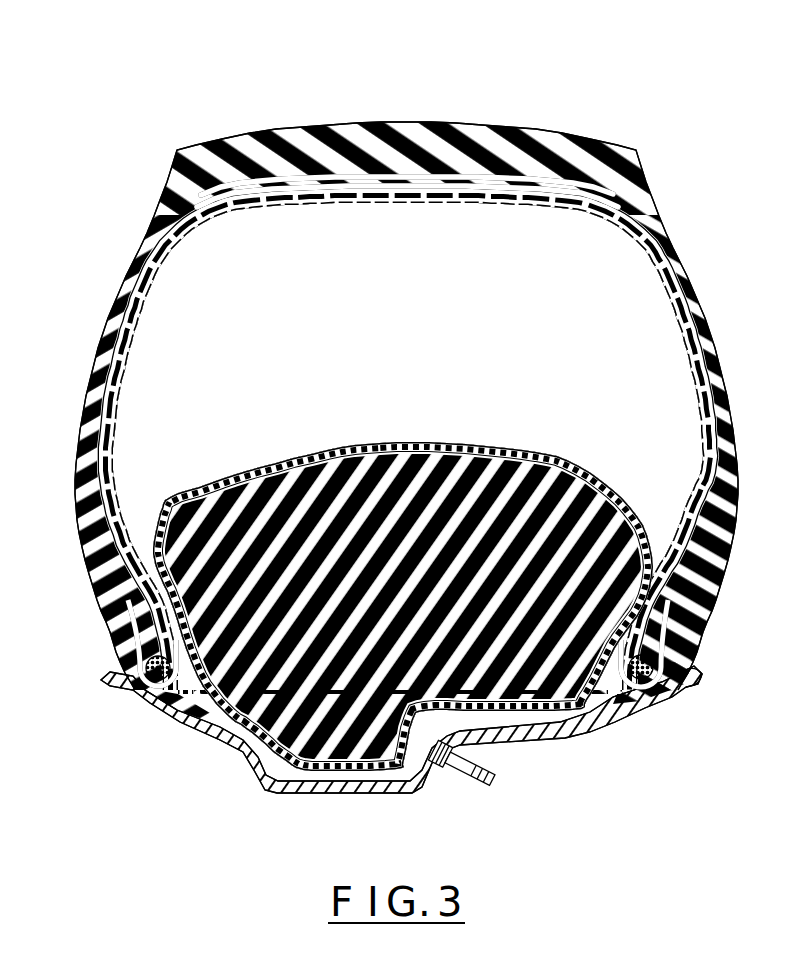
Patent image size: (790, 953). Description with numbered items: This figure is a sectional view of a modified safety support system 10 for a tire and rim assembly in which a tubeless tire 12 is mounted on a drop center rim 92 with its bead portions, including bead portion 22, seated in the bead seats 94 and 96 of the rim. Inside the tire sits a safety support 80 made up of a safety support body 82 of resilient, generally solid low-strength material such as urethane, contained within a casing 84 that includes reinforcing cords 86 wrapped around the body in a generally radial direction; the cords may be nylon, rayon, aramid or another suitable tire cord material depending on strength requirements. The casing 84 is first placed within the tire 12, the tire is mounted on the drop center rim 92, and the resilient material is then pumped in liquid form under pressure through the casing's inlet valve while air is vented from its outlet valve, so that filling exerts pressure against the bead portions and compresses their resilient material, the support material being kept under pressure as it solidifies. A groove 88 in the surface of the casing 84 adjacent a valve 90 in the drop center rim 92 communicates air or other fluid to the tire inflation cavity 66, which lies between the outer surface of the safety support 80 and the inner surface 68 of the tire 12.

The safety support system 10 is at (597, 78).
The tubeless tire 12 is at (395, 476).
The bead portion 22 is at (395, 584).
The tire inflation cavity 66 is at (496, 311).
The inner surface of the tire 68 is at (407, 214).
The safety support 80 is at (403, 581).
The safety support body 82 is at (403, 586).
The casing 84 is at (403, 597).
The reinforcing cords 86 is at (403, 587).
The groove 88 is at (401, 729).
The valve 90 is at (462, 790).
The drop center rim 92 is at (702, 698).
The bead seat 94 is at (160, 728).
The bead seat 96 is at (649, 722).